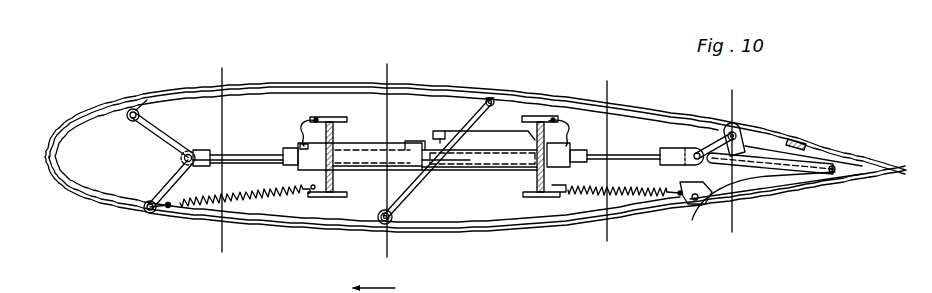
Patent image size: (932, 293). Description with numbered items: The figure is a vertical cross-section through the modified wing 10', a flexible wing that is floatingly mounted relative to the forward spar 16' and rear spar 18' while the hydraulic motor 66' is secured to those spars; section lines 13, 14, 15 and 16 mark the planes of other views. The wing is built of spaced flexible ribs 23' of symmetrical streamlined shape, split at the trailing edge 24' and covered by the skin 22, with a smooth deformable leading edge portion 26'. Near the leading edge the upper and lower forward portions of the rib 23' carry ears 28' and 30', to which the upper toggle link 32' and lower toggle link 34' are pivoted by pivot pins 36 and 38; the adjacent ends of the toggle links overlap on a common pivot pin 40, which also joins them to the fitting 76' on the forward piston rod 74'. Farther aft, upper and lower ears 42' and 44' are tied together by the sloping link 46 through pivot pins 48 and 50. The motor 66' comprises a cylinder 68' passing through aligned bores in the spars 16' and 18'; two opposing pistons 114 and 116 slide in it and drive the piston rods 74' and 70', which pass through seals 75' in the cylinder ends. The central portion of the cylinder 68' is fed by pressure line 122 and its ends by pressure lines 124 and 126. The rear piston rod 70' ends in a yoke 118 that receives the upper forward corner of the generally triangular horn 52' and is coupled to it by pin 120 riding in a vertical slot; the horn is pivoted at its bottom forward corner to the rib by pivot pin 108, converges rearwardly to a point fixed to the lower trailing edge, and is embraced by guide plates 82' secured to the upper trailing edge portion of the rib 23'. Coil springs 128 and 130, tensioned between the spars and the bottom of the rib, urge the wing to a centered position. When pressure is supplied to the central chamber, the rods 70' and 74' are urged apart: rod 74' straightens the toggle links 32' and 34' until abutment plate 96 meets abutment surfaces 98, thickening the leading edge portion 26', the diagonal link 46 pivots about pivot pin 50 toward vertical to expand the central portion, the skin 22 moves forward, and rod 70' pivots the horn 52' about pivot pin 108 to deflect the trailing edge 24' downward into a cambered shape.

The wing 10' is at (555, 64).
The section line 13- 13 is at (387, 64).
The section line 14- 14 is at (607, 81).
The section line 15- 15 is at (732, 90).
The section line 16- 16 is at (197, 161).
The forward spar 16' is at (329, 130).
The rear spar 18' is at (523, 153).
The skin 22 is at (268, 88).
The rib 23' is at (458, 144).
The trailing edge 24' is at (886, 181).
The leading edge portion 26' is at (39, 150).
The upper ear 28' is at (142, 89).
The lower ear 30' is at (165, 227).
The upper toggle link 32' is at (168, 130).
The lower toggle link 34' is at (157, 184).
The pivot pin 36 is at (129, 121).
The pivot pin 38 is at (136, 213).
The pivot pin 40 is at (183, 158).
The upper ear 42' is at (503, 83).
The lower ear 44' is at (400, 232).
The sloping link 46 is at (425, 175).
The pivot pin 48 is at (488, 99).
The pivot pin 50 is at (382, 214).
The horn 52' is at (763, 200).
The hydraulic motor 66' is at (479, 181).
The cylinder 68' is at (360, 145).
The piston rod 70' is at (623, 139).
The piston rod 74' is at (246, 141).
The seals 75' is at (432, 144).
The fitting 76' is at (246, 174).
The guide plates 82' is at (771, 138).
The abutment plate 96 is at (203, 150).
The abutment surfaces 98 is at (200, 168).
The pivot pin 108 is at (693, 205).
The piston 114 is at (417, 150).
The piston 116 is at (474, 180).
The yoke 118 is at (667, 150).
The pin 120 is at (697, 152).
The pressure line 122 is at (447, 120).
The pressure line 124 is at (300, 124).
The pressure line 126 is at (567, 118).
The coil spring 128 is at (261, 194).
The coil spring 130 is at (643, 194).